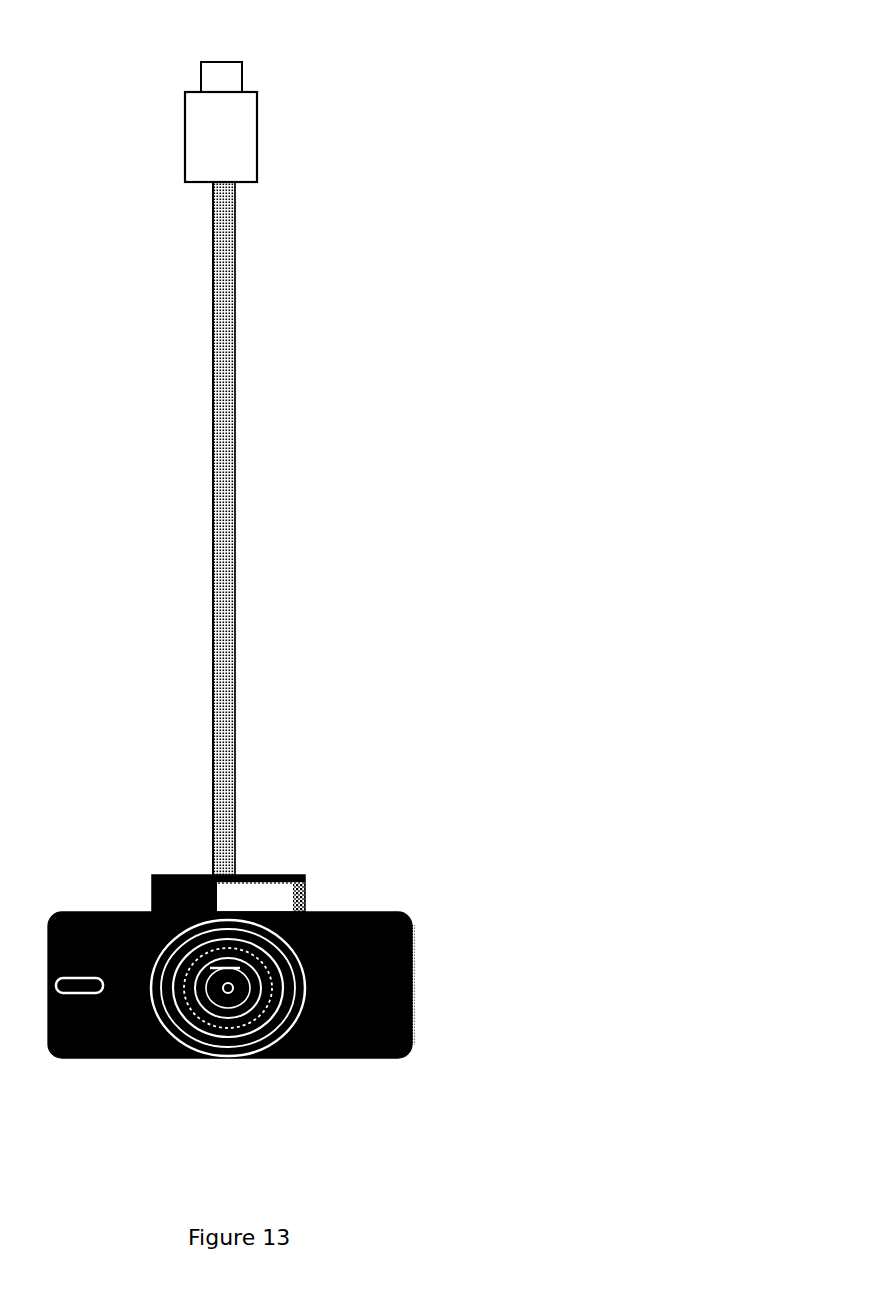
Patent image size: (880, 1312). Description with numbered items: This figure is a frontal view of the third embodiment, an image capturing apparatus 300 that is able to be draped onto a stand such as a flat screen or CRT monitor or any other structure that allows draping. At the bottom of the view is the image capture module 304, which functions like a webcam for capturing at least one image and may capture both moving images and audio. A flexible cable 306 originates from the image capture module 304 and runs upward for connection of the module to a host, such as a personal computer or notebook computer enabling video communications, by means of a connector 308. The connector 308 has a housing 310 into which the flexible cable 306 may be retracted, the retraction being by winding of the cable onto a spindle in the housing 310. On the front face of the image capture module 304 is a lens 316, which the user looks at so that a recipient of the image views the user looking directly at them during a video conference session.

The image capturing apparatus 300 is at (357, 383).
The image capture module 304 is at (410, 972).
The flexible cable 306 is at (220, 295).
The connector 308 is at (232, 71).
The housing 310 is at (233, 118).
The lens 316 is at (150, 922).